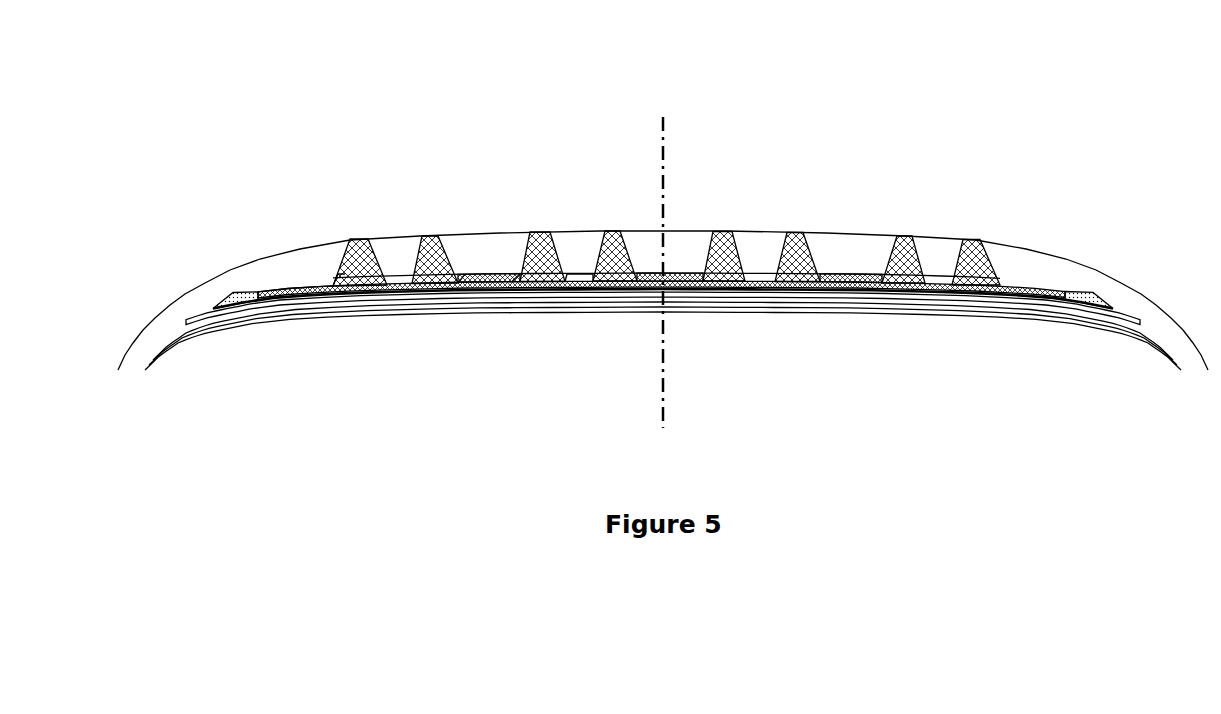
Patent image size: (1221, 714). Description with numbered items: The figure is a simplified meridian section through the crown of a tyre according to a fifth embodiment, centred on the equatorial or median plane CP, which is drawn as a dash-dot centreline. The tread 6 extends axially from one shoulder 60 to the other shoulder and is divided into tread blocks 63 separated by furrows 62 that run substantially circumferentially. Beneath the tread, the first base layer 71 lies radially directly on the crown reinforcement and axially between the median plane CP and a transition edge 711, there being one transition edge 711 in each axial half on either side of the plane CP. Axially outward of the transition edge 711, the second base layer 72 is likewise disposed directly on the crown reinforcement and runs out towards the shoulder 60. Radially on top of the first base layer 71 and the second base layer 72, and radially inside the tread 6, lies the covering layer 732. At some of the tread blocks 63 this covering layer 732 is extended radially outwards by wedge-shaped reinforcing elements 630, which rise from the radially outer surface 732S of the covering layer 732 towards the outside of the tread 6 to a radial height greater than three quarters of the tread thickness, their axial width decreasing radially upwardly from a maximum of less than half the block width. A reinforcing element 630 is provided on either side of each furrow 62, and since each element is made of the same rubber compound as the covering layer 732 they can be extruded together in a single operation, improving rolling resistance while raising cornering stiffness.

The shoulder 60 is at (183, 270).
The tread 6 is at (335, 196).
The wedge-shaped reinforcing element 630 is at (435, 253).
The tread block 63 is at (488, 255).
The furrow 62 is at (580, 253).
The first base layer 71 is at (630, 285).
The transition edge 711 is at (490, 296).
The second base layer 72 is at (377, 290).
The covering layer 732 is at (458, 281).
The radially outer surface of the covering layer 732S is at (316, 274).
The equatorial plane CP is at (689, 255).